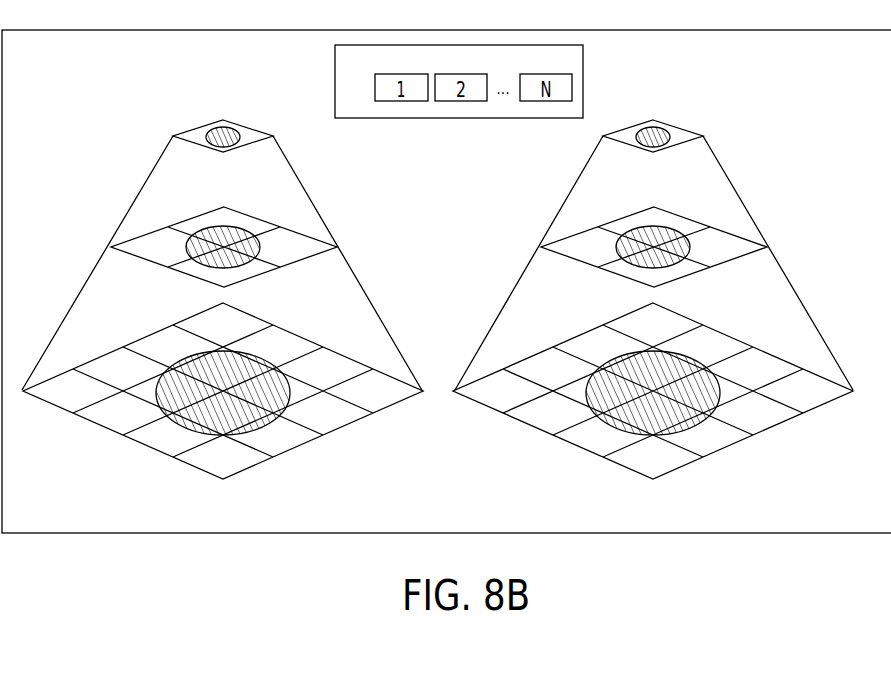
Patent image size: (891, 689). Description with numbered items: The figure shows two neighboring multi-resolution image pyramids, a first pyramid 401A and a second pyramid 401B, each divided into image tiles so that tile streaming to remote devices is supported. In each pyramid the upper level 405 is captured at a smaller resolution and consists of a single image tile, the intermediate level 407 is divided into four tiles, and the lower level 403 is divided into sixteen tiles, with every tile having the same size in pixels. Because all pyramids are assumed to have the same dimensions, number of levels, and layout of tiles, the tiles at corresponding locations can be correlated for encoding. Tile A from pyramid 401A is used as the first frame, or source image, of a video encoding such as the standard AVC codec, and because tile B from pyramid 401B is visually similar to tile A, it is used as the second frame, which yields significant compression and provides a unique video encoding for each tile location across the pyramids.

The image pyramid 401A is at (107, 166).
The image pyramid 401B is at (816, 166).
The lower level 403 is at (293, 333).
The upper level 405 is at (249, 127).
The intermediate level 407 is at (248, 212).
The tile A is at (400, 106).
The tile B is at (460, 106).